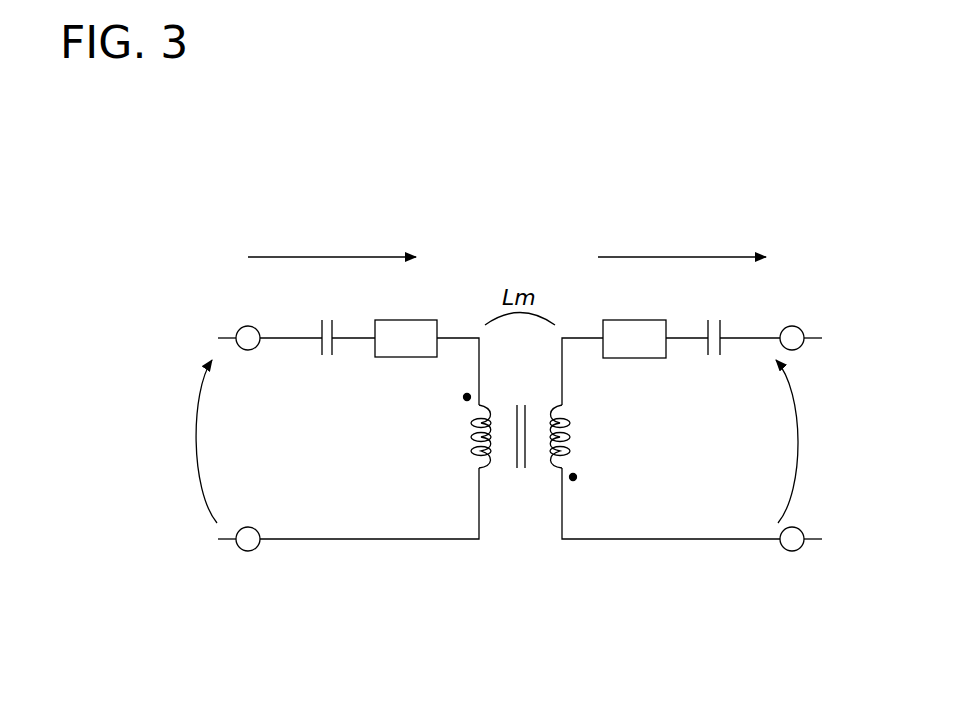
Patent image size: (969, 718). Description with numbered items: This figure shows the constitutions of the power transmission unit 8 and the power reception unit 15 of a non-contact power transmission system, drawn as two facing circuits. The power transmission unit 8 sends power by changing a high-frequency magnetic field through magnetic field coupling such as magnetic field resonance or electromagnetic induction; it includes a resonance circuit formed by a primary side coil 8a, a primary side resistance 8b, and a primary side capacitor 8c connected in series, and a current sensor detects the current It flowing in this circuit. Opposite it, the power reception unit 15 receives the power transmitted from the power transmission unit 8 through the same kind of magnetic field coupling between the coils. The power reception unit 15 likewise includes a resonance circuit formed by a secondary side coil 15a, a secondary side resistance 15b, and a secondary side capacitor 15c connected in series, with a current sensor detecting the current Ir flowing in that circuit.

The power transmission unit 8 is at (213, 229).
The primary side coil 8a is at (488, 468).
The primary side resistance 8b is at (430, 320).
The primary side capacitor 8c is at (317, 328).
The power reception unit 15 is at (791, 229).
The secondary side coil 15a is at (553, 468).
The secondary side resistance 15b is at (609, 320).
The secondary side capacitor 15c is at (722, 332).